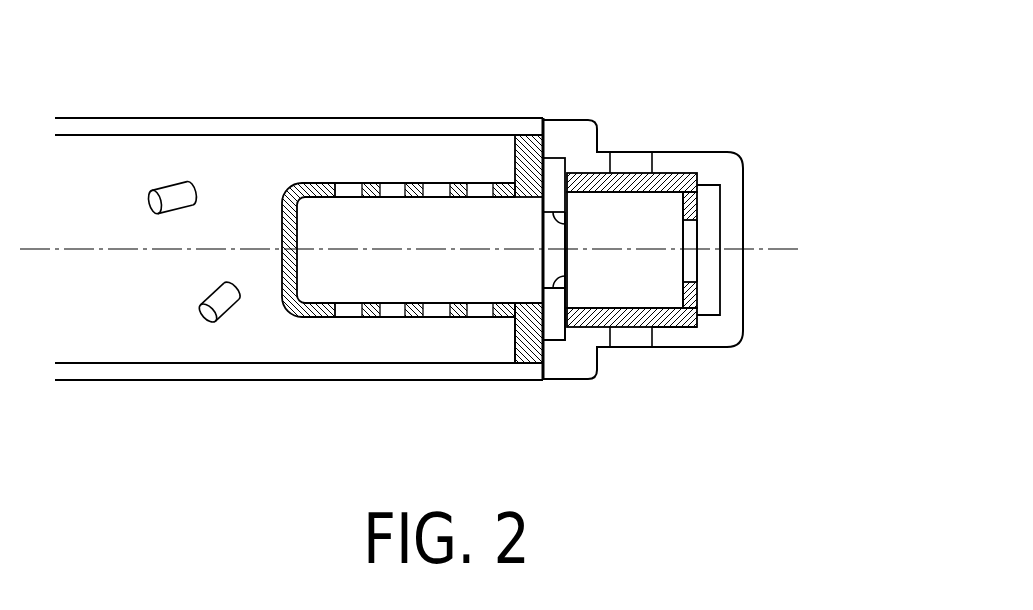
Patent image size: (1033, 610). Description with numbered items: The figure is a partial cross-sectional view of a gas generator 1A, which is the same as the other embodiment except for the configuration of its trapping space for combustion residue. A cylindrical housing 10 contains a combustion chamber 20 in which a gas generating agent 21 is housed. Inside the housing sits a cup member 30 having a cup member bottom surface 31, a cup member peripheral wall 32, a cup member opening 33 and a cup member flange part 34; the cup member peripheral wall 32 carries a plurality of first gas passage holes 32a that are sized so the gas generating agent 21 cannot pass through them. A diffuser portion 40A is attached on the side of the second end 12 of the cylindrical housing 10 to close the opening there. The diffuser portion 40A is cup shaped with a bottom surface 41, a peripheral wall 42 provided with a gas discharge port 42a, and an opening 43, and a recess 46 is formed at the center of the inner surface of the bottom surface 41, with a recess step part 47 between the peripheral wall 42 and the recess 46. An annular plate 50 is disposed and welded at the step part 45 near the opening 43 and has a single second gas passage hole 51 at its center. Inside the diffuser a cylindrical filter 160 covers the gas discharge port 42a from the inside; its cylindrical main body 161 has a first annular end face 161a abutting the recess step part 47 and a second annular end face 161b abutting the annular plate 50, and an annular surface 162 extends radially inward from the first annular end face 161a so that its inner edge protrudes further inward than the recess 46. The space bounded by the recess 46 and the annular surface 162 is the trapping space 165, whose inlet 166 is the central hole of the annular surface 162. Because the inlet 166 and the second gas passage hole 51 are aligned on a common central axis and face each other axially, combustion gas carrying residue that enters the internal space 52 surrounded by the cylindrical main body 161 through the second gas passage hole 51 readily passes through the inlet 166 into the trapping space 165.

The gas generator 1A is at (100, 103).
The cylindrical housing 10 is at (240, 118).
The second end 12 is at (548, 126).
The combustion chamber 20 is at (101, 226).
The gas generating agent 21 is at (180, 210).
The cup member 30 is at (342, 258).
The cup member bottom surface 31 is at (282, 266).
The cup member peripheral wall 32 is at (410, 182).
The first gas passage holes 32a is at (390, 318).
The cup member opening 33 is at (545, 298).
The cup member flange part 34 is at (520, 136).
The diffuser portion 40A is at (683, 248).
The bottom surface 41 is at (745, 216).
The peripheral wall 42 is at (635, 254).
The gas discharge port 42a is at (627, 150).
The opening 43 is at (567, 237).
The step part 45 is at (552, 340).
The recess 46 is at (700, 276).
The recess step part 47 is at (685, 328).
The annular plate 50 is at (545, 299).
The second gas passage hole 51 is at (565, 228).
The internal space 52 is at (668, 246).
The cylindrical filter 160 is at (726, 243).
The cylindrical main body 161 is at (678, 176).
The first annular end face 161a is at (697, 321).
The second annular end face 161b is at (515, 325).
The annular surface 162 is at (690, 210).
The trapping space 165 is at (705, 289).
The inlet 166 is at (685, 273).